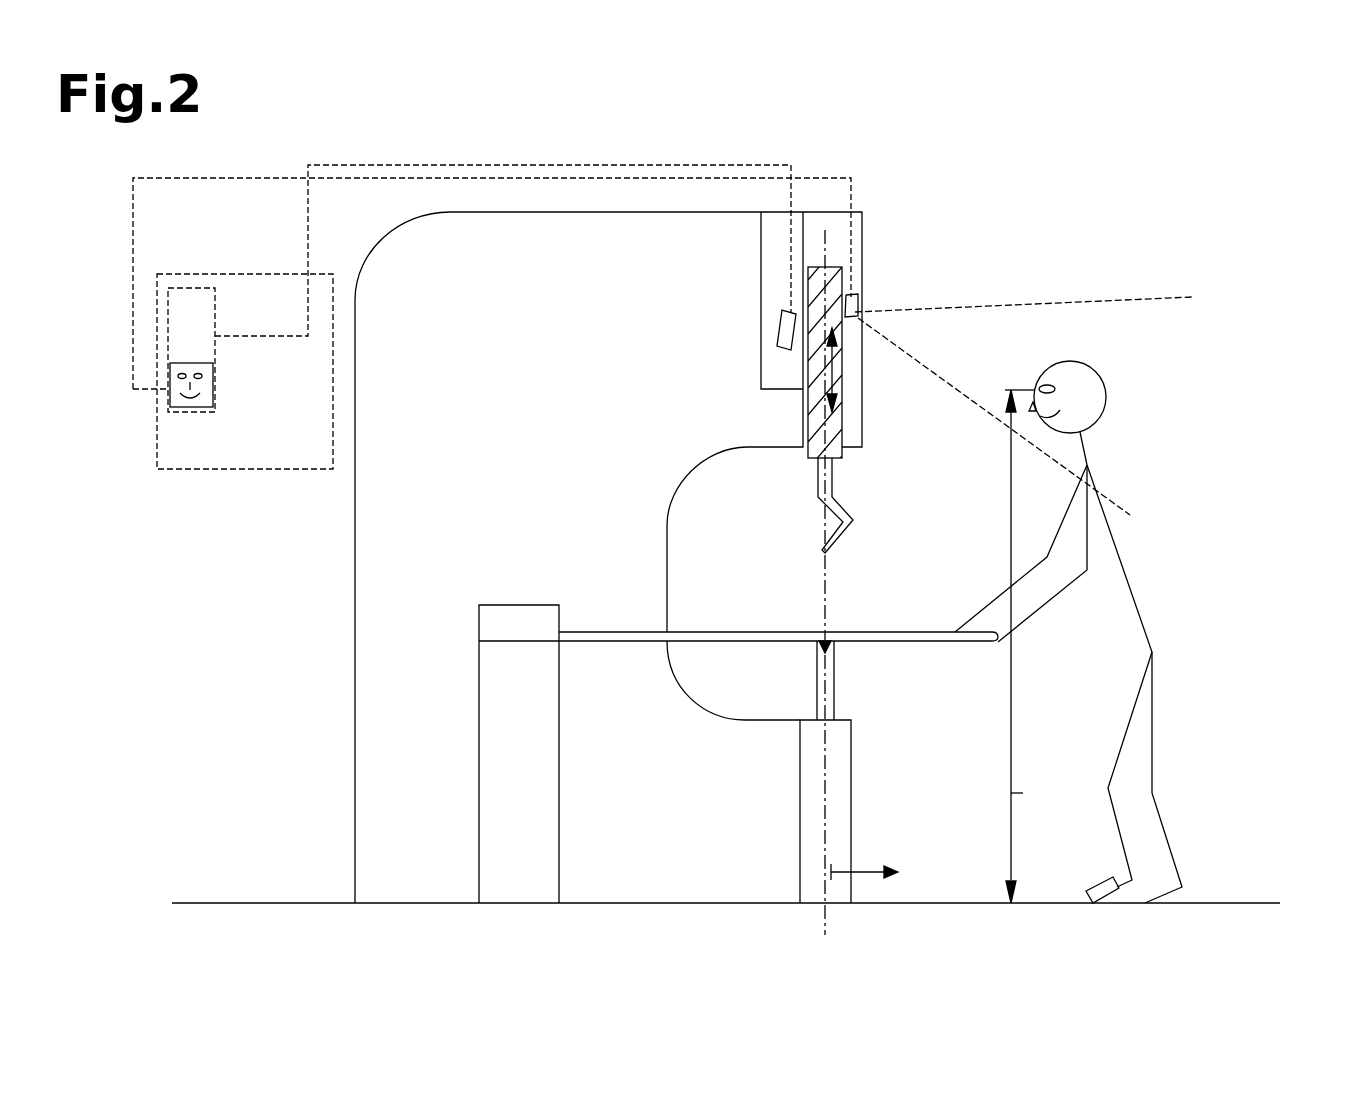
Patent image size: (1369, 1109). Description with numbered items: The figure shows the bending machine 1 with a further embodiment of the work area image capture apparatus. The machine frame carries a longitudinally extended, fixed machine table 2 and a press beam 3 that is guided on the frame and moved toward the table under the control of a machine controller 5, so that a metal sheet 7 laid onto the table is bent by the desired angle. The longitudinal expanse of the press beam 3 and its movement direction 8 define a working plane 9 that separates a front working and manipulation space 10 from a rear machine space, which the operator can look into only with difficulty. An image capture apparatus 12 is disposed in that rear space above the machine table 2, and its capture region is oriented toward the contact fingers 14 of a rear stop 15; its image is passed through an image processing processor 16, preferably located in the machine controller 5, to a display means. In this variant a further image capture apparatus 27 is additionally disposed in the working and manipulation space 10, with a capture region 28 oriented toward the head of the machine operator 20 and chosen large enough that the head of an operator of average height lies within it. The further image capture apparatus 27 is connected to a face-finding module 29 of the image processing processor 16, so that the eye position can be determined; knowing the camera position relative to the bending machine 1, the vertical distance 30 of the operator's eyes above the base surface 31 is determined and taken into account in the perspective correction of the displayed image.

The bending machine 1 is at (940, 181).
The machine table 2 is at (808, 818).
The press beam 3 is at (840, 272).
The machine controller 5 is at (235, 443).
The metal sheet 7 is at (888, 640).
The movement direction 8 is at (838, 378).
The working plane 9 is at (820, 240).
The working and manipulation space 10 is at (838, 878).
The image capture apparatus 12 is at (783, 312).
The contact fingers 14 is at (614, 635).
The rear stop 15 is at (526, 876).
The image processing processor 16 is at (175, 303).
The machine operator 20 is at (1165, 459).
The further image capture apparatus 27 is at (858, 298).
The capture region 28 is at (1102, 286).
The face-finding module 29 is at (160, 401).
The vertical distance 30 is at (1016, 793).
The base surface 31 is at (1228, 900).